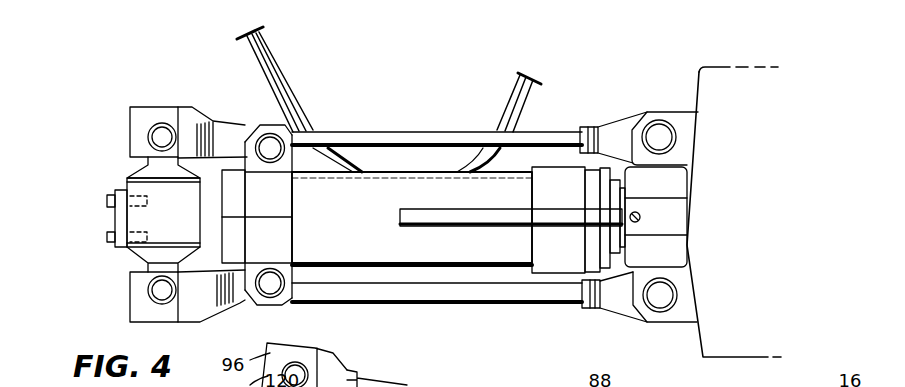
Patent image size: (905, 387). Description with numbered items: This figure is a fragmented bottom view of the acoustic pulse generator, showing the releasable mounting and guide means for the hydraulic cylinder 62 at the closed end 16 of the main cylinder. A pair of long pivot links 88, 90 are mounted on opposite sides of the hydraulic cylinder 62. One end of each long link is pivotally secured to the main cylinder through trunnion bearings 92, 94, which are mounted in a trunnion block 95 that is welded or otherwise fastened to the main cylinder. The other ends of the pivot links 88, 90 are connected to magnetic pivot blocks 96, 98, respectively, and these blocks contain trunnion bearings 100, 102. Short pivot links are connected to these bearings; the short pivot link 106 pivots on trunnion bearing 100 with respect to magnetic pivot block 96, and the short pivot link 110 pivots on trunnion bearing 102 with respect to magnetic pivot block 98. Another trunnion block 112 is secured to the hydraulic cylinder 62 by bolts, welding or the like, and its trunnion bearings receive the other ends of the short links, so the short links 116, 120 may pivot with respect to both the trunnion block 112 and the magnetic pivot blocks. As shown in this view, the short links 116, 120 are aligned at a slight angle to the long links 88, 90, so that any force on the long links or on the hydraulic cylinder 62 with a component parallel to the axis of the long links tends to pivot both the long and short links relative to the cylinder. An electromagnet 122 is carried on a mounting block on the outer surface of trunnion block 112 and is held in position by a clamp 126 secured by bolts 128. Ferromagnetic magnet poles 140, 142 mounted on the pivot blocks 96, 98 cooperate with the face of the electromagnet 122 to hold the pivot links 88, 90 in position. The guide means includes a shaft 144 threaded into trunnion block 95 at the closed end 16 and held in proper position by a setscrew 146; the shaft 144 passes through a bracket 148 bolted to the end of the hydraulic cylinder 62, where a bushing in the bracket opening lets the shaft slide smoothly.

The closed end 16 is at (698, 90).
The hydraulic cylinder 62 is at (352, 200).
The pivot link 88 is at (383, 130).
The pivot link 90 is at (420, 292).
The trunnion bearing 92 is at (660, 135).
The trunnion bearing 94 is at (662, 293).
The trunnion block 95 is at (675, 323).
The magnetic pivot block 96 is at (158, 118).
The magnetic pivot block 98 is at (142, 302).
The trunnion bearing 100 is at (150, 133).
The trunnion bearing 102 is at (162, 292).
The short pivot link 106 is at (225, 140).
The short pivot link 110 is at (237, 306).
The trunnion block 112 is at (278, 252).
The short link 116 is at (271, 146).
The short link 120 is at (274, 285).
The electromagnet 122 is at (118, 252).
The clamp 126 is at (110, 218).
The bolts 128 is at (103, 202).
The magnet pole 140 is at (133, 175).
The magnet pole 142 is at (135, 256).
The shaft 144 is at (418, 216).
The setscrew 146 is at (640, 215).
The bracket 148 is at (593, 178).